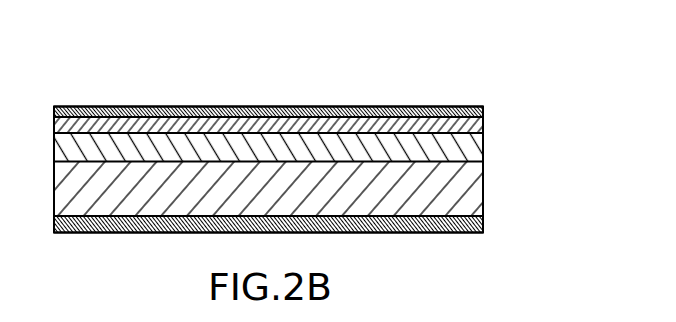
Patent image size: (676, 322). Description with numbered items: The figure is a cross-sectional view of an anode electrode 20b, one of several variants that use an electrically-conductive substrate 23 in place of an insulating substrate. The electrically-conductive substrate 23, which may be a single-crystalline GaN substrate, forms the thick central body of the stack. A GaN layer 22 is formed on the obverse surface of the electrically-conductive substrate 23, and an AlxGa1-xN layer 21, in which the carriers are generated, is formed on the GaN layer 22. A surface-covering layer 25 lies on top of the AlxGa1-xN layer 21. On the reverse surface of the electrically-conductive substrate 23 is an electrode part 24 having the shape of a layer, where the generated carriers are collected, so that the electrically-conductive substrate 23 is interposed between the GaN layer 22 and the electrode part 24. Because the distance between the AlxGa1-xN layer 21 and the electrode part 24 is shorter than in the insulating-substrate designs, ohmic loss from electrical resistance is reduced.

The anode electrode 20b is at (387, 78).
The surface-covering layer 25 is at (477, 106).
The AlxGa1-xN layer 21 is at (482, 121).
The GaN layer 22 is at (472, 148).
The electrically-conductive substrate 23 is at (467, 188).
The electrode part 24 is at (483, 225).